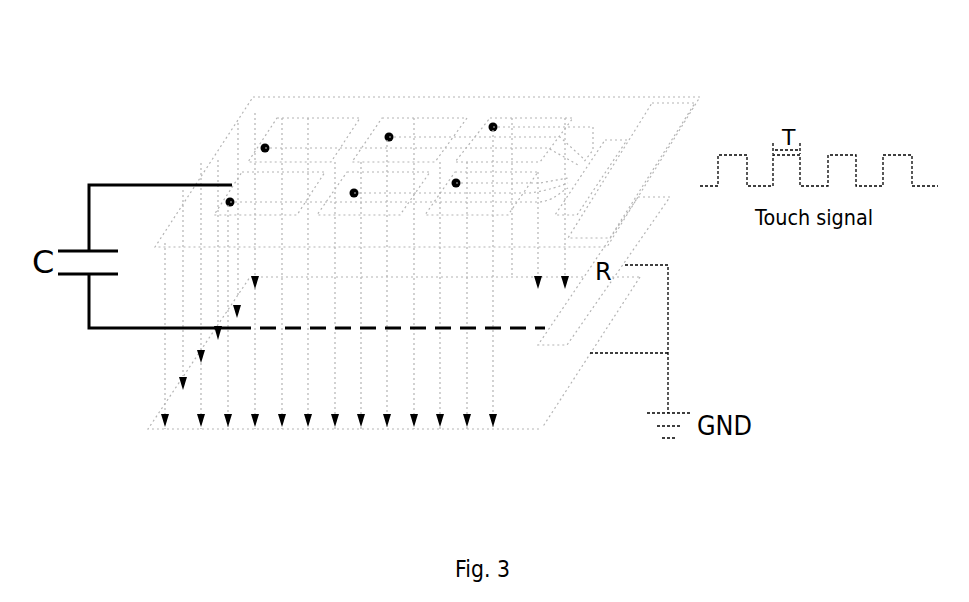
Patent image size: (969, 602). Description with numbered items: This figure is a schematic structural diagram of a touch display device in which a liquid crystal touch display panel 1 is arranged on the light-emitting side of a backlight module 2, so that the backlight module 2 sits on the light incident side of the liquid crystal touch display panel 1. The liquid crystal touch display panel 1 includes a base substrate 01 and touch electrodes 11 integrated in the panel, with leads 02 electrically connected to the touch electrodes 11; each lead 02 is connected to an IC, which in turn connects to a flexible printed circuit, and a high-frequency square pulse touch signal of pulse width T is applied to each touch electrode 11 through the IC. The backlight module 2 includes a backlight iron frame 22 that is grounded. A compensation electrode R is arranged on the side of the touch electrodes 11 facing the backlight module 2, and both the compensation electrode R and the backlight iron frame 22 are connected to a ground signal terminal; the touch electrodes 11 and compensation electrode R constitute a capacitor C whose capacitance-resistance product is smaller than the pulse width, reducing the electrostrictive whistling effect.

The liquid crystal touch display panel 1 is at (513, 90).
The base substrate 01 is at (610, 107).
The lead 02 is at (412, 118).
The touch electrode 11 is at (302, 118).
The backlight module 2 is at (335, 443).
The backlight iron frame 22 is at (537, 383).